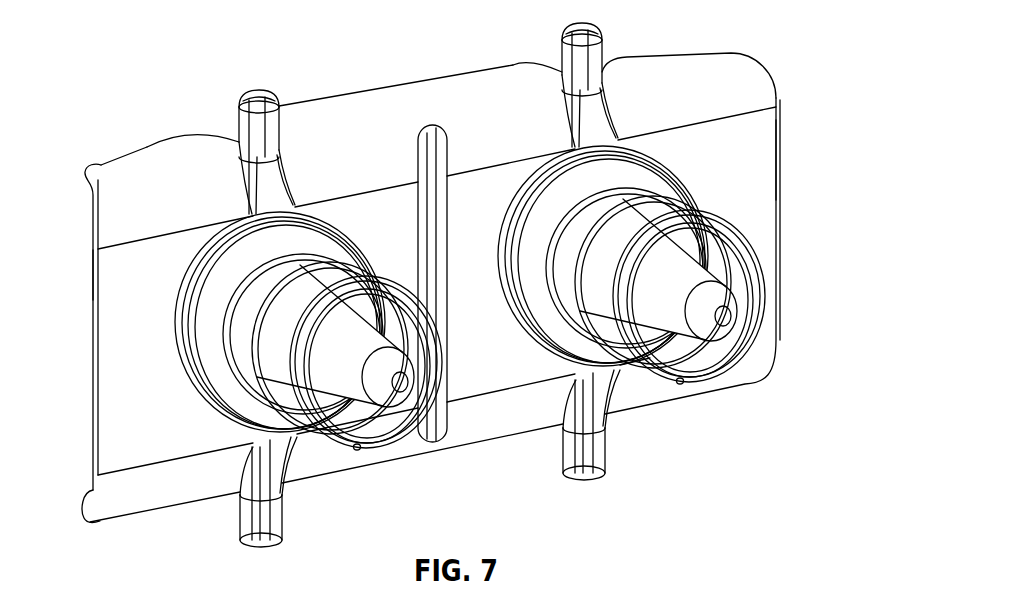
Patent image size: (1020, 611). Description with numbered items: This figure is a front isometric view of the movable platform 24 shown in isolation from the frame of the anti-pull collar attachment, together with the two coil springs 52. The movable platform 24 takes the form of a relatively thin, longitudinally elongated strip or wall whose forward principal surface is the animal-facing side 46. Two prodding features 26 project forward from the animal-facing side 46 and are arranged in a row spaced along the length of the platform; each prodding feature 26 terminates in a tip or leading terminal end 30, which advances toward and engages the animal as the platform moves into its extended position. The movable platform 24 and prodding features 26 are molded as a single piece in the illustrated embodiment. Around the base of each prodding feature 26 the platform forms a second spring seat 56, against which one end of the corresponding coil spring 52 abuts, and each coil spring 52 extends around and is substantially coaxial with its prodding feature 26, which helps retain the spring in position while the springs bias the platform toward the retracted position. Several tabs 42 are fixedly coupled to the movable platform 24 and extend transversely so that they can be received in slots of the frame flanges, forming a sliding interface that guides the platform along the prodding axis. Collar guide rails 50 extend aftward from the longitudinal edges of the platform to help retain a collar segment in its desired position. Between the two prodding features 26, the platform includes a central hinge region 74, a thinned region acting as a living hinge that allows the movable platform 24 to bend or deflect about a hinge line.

The movable platform 24 is at (96, 283).
The prodding features 26 is at (372, 343).
The leading terminal end 30 is at (393, 357).
The tabs 42 is at (260, 88).
The animal-facing side 46 is at (724, 175).
The collar guide rails 50 is at (157, 162).
The coil springs 52 is at (362, 451).
The second spring seat 56 is at (202, 280).
The central hinge region 74 is at (432, 162).